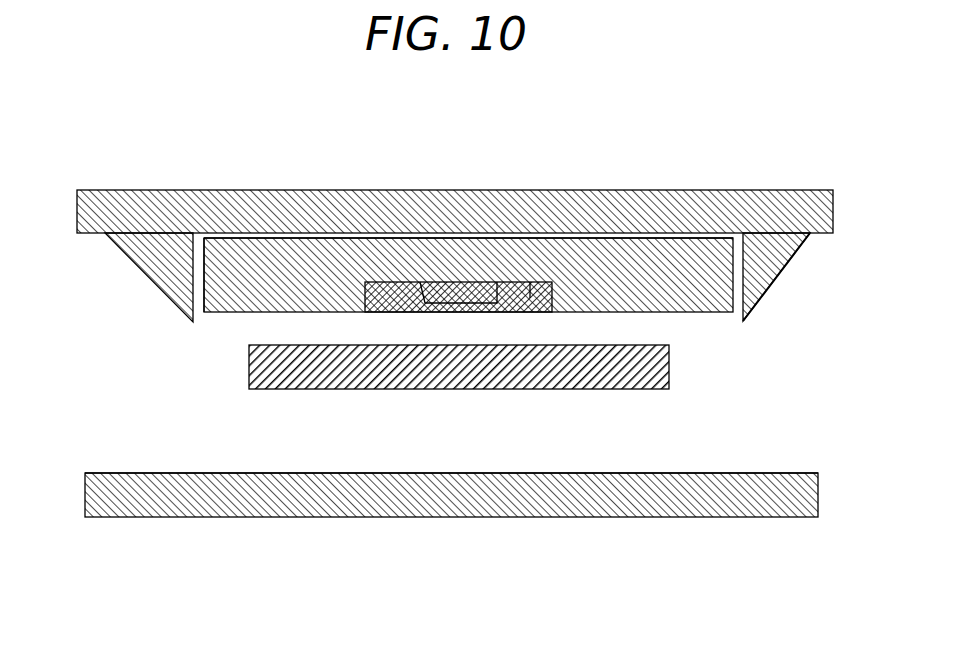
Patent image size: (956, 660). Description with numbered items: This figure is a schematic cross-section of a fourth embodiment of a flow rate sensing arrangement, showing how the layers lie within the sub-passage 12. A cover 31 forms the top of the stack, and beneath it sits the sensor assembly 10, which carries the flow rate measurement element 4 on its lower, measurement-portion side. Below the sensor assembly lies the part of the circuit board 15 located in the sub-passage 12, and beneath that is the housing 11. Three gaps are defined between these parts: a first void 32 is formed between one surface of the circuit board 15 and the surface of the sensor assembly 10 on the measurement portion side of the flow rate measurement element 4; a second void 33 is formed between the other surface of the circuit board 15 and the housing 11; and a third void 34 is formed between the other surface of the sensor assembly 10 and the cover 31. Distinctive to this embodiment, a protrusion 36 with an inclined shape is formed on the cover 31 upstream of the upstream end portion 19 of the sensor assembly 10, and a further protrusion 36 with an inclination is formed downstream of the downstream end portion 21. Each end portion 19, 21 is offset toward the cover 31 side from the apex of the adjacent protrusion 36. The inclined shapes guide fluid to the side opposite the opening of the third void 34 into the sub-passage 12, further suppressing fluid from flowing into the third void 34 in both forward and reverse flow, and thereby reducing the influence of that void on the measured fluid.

The cover 31 is at (488, 205).
The protrusion 36 is at (175, 263).
The downstream end portion 21 is at (735, 275).
The sensor assembly 10 is at (643, 273).
The sub-passage 12 is at (118, 315).
The upstream end portion 19 is at (205, 270).
The third void 34 is at (362, 233).
The flow rate measurement element 4 is at (532, 282).
The circuit board 15 is at (497, 370).
The housing 11 is at (622, 497).
The first void 32 is at (338, 320).
The second void 33 is at (320, 437).